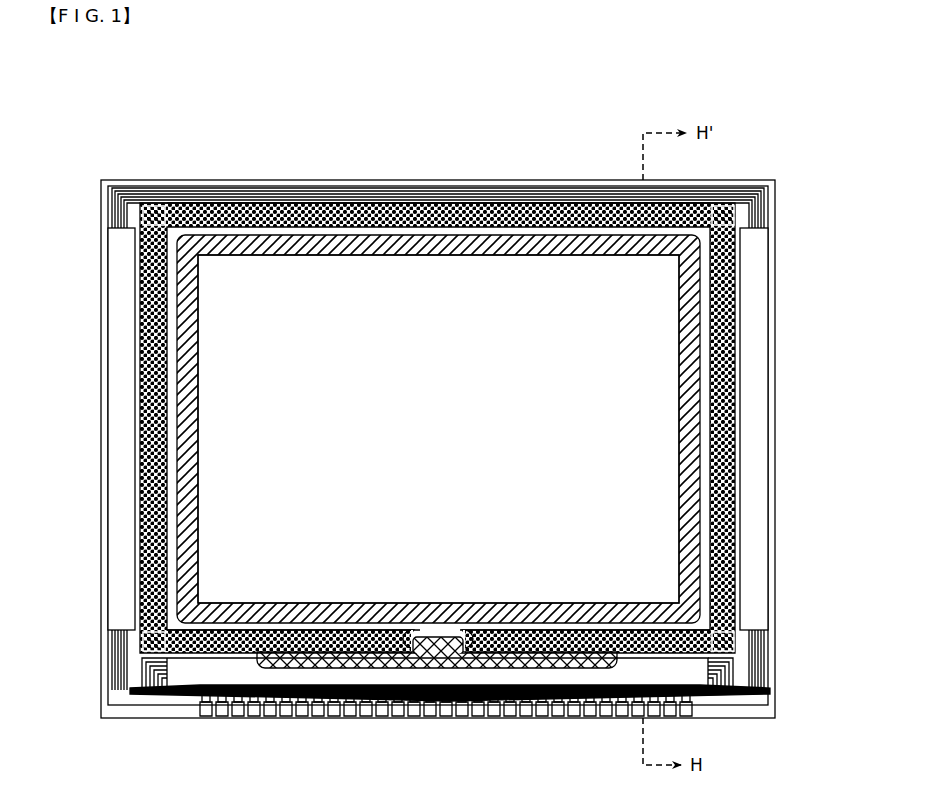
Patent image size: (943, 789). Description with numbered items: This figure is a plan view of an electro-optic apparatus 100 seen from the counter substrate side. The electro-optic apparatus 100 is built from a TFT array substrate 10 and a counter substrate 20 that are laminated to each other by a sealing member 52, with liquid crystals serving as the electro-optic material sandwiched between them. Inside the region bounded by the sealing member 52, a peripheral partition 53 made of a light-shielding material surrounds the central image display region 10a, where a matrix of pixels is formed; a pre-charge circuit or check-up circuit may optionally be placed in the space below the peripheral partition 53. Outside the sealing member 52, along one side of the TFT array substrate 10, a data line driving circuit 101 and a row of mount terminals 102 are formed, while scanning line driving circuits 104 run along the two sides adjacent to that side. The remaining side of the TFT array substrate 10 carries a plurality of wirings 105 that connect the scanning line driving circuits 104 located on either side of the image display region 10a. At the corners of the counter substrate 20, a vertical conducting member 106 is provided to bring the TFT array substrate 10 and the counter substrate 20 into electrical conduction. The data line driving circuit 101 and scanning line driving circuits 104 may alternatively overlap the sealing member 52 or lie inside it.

The electro-optic apparatus 100 is at (718, 105).
The TFT array substrate 10 is at (455, 176).
The image display region 10a is at (462, 442).
The counter substrate 20 is at (350, 204).
The sealing member 52 is at (735, 456).
The peripheral partition 53 is at (690, 386).
The data line driving circuit 101 is at (667, 672).
The mount terminals 102 is at (450, 709).
The scanning line driving circuits 104 is at (121, 472).
The wirings 105 is at (235, 186).
The vertical conducting member 106 is at (152, 212).